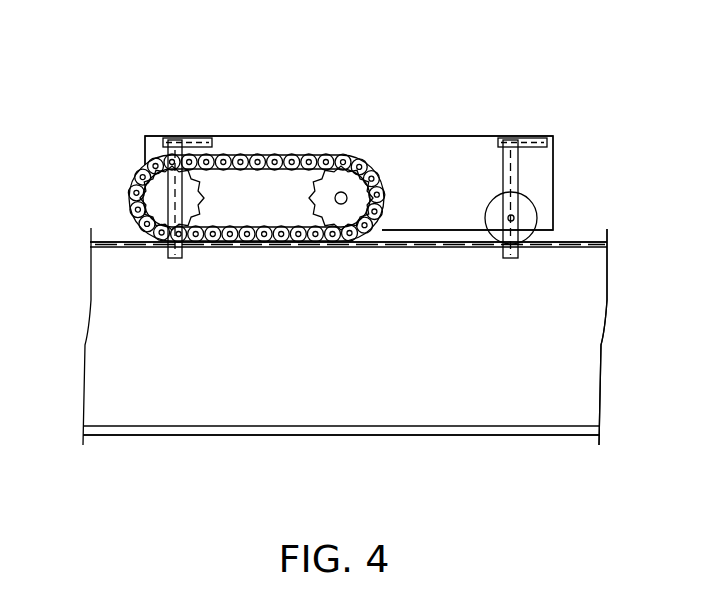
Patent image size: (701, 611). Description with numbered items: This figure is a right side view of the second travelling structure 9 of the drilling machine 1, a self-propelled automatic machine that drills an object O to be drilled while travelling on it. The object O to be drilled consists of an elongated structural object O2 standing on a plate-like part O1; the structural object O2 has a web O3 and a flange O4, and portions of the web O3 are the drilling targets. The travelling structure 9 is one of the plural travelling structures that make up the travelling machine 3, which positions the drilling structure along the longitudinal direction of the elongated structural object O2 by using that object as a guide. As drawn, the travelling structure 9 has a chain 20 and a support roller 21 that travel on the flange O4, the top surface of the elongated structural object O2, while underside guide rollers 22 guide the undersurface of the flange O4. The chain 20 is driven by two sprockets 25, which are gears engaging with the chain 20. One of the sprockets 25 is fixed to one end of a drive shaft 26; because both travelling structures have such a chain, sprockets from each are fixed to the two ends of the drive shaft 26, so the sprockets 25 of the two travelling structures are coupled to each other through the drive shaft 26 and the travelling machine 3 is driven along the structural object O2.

The drilling machine 1 is at (181, 82).
The travelling machine 3 is at (494, 118).
The travelling structure 9 is at (377, 160).
The chain 20 is at (332, 157).
The support roller 21 is at (495, 192).
The underside guide rollers 22 is at (165, 258).
The sprocket 25 is at (300, 155).
The drive shaft 26 is at (341, 192).
The object to be drilled O is at (238, 440).
The plate-like part O1 is at (348, 436).
The elongated structural object O2 is at (589, 241).
The web O3 is at (565, 364).
The flange O4 is at (557, 242).